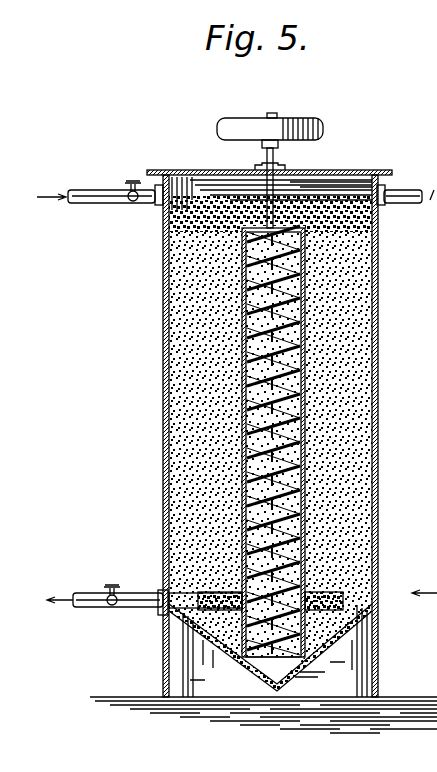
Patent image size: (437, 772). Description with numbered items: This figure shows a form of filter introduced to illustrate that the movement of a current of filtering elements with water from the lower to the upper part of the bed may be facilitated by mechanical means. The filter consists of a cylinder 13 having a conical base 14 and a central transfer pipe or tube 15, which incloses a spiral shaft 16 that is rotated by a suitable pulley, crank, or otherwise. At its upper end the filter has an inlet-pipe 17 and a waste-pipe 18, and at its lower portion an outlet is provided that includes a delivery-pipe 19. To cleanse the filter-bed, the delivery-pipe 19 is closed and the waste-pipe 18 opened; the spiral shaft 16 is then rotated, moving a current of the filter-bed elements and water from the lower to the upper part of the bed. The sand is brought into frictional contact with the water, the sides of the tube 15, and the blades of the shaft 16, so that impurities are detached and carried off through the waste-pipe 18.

The cylinder 13 is at (378, 432).
The conical base 14 is at (321, 662).
The central transfer pipe or tube 15 is at (270, 170).
The spiral shaft 16 is at (306, 522).
The inlet-pipe 17 is at (100, 191).
The waste-pipe 18 is at (405, 191).
The delivery-pipe 19 is at (242, 596).